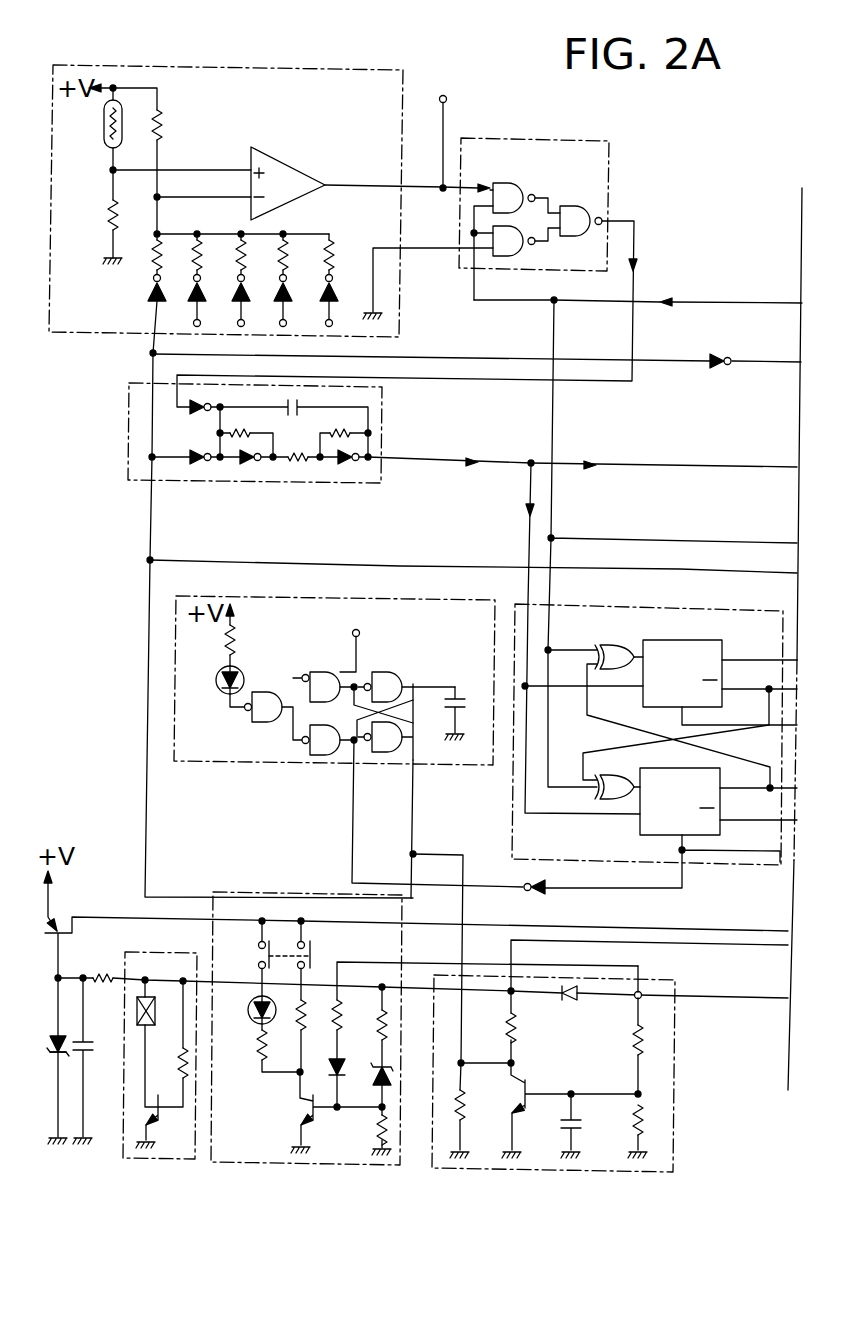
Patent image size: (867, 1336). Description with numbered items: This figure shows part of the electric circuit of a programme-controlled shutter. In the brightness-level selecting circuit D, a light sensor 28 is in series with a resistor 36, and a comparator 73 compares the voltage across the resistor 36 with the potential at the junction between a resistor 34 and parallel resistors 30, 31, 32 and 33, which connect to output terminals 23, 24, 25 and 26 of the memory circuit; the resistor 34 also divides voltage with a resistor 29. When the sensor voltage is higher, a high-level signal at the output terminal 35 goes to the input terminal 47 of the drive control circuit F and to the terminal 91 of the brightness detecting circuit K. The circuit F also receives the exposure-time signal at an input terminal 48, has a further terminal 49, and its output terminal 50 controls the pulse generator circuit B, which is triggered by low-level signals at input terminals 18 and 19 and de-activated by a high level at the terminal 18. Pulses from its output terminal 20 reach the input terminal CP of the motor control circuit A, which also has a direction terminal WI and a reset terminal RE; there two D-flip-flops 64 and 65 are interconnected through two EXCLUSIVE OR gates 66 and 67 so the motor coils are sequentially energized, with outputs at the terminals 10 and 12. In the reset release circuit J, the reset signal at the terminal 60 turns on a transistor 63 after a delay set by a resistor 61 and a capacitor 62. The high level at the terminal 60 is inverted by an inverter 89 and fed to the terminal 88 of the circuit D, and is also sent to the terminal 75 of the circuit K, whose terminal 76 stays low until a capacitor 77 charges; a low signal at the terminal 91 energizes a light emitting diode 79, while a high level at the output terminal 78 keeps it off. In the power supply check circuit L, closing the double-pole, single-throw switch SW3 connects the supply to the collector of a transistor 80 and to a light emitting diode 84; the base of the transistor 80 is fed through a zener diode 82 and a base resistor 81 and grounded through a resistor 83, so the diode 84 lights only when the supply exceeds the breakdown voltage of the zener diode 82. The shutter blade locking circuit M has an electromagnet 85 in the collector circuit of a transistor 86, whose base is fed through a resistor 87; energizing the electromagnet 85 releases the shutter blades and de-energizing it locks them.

The output terminal 10 is at (758, 660).
The output terminal 12 is at (768, 790).
The input terminal 18 is at (177, 380).
The input terminal 19 is at (192, 463).
The output terminal 20 is at (372, 466).
The output terminal of memory circuit 23 is at (193, 293).
The output terminal of memory circuit 24 is at (238, 293).
The output terminal of memory circuit 25 is at (280, 292).
The output terminal of memory circuit 26 is at (322, 292).
The light sensor 28 is at (104, 140).
The voltage dividing resistor 29 is at (153, 253).
The parallel resistor 30 is at (197, 253).
The parallel resistor 31 is at (240, 257).
The parallel resistor 32 is at (282, 253).
The parallel resistor 33 is at (330, 250).
The resistor 34 is at (163, 130).
The output terminal 35 is at (403, 187).
The resistor 36 is at (108, 212).
The input terminal 47 is at (466, 190).
The input terminal 48 is at (515, 303).
The terminal 49 is at (431, 250).
The output terminal 50 is at (614, 221).
The terminal 60 is at (463, 893).
The resistor 61 is at (632, 1040).
The capacitor 62 is at (562, 1125).
The transistor 63 is at (527, 1086).
The D-flip-flop 64 is at (643, 698).
The D-flip-flop 65 is at (640, 830).
The EXCLUSIVE OR gate 66 is at (604, 650).
The EXCLUSIVE OR gate 67 is at (596, 794).
The comparator 73 is at (288, 160).
The terminal 75 is at (352, 828).
The terminal 76 is at (428, 684).
The capacitor 77 is at (462, 698).
The output terminal 78 is at (232, 710).
The light emitting diode 79 is at (243, 676).
The transistor 80 is at (298, 1108).
The base resistor 81 is at (388, 1028).
The zener diode 82 is at (386, 1085).
The resistor 83 is at (376, 1127).
The light emitting diode display means 84 is at (254, 1020).
The electromagnet 85 is at (137, 1012).
The transistor 86 is at (145, 1108).
The resistor 87 is at (190, 1066).
The terminal 88 is at (150, 273).
The inverter 89 is at (147, 293).
The terminal 91 is at (443, 95).
The brightness-level selecting circuit D is at (304, 66).
The drive control circuit F is at (609, 150).
The pulse generator circuit B is at (129, 406).
The brightness detecting circuit K is at (302, 597).
The motor control circuit A is at (512, 820).
The shutter blade locking circuit M is at (142, 1162).
The power supply check circuit L is at (268, 1165).
The reset release circuit J is at (525, 1172).
The input terminal CP is at (522, 568).
The direction terminal WI is at (555, 555).
The reset line RE is at (734, 725).
The double-pole, single-throw switch SW3 is at (313, 950).